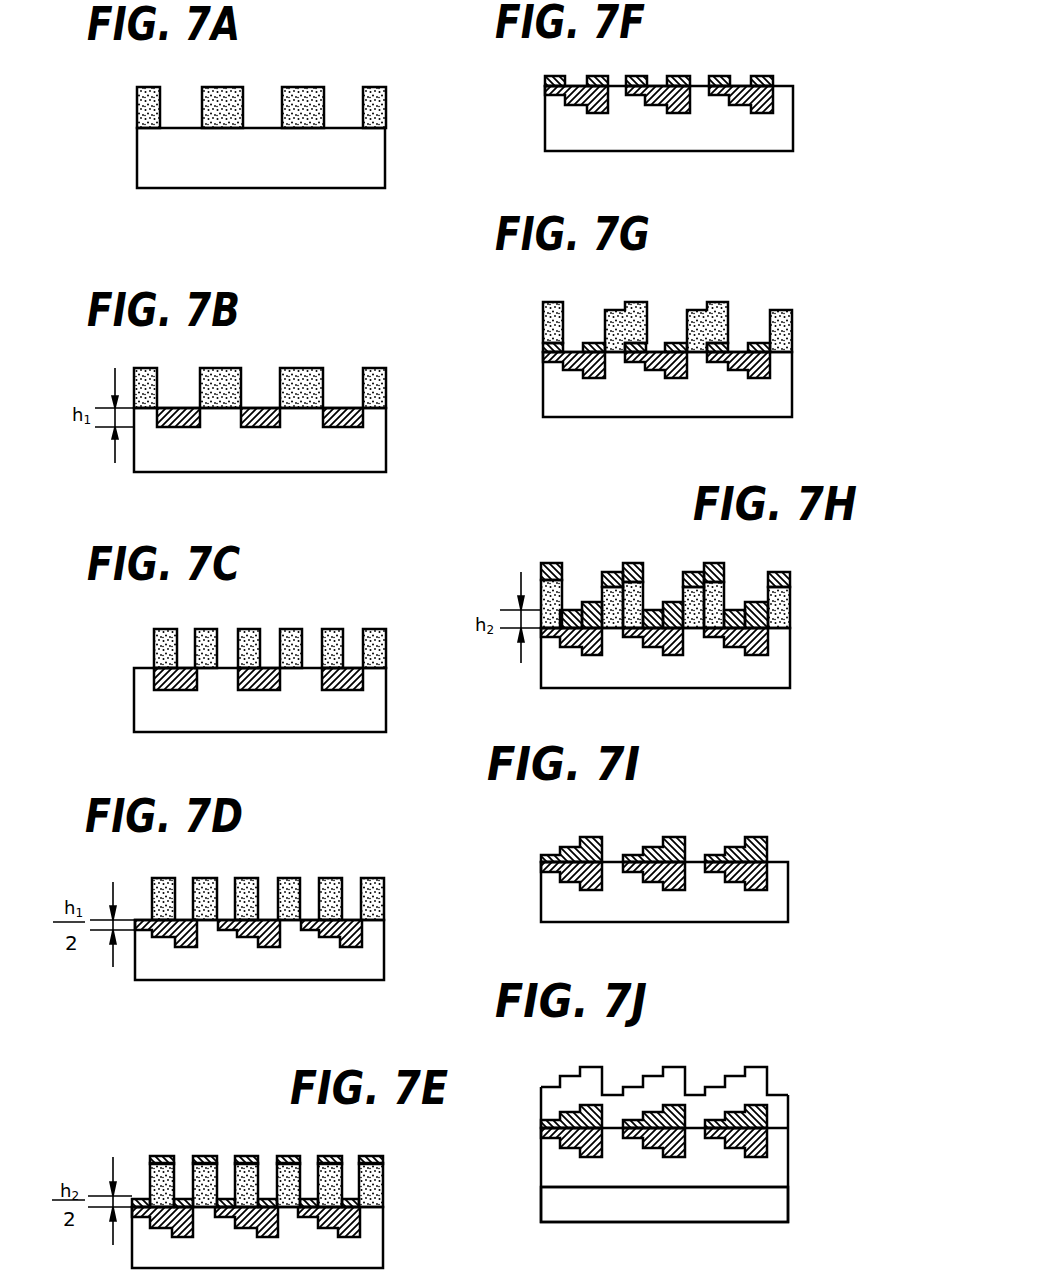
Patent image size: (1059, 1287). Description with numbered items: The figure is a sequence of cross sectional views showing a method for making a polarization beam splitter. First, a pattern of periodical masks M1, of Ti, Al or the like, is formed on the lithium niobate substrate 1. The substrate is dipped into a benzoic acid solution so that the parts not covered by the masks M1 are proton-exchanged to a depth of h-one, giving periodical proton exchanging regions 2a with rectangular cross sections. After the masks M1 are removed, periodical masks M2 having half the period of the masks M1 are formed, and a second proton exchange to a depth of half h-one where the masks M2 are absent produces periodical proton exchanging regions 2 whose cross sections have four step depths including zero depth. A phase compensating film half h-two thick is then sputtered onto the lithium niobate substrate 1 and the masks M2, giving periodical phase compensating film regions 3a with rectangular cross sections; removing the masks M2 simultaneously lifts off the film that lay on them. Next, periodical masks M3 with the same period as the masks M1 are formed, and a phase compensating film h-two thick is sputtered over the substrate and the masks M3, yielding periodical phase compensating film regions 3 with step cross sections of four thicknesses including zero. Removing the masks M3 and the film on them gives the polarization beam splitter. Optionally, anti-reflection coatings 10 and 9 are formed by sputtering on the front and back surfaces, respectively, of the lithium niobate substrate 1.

In FIG. 7A, the lithium niobate substrate 1 is at (313, 155).
In FIG. 7A, the mask M1 is at (327, 103).
In FIG. 7B, the proton exchanging region 2a is at (282, 415).
In FIG. 7C, the mask M2 is at (345, 650).
In FIG. 7D, the proton exchanging region 2 is at (283, 927).
In FIG. 7E, the phase compensating film region 3a is at (137, 1200).
In FIG. 7J, the anti-reflection coating 9 is at (548, 1207).
In FIG. 7G, the mask M3 is at (733, 320).
In FIG. 7H, the phase compensating film region 3 is at (583, 602).
In FIG. 7I, the phase compensating film region 3 is at (650, 853).
In FIG. 7J, the anti-reflection coating 10 is at (677, 1088).